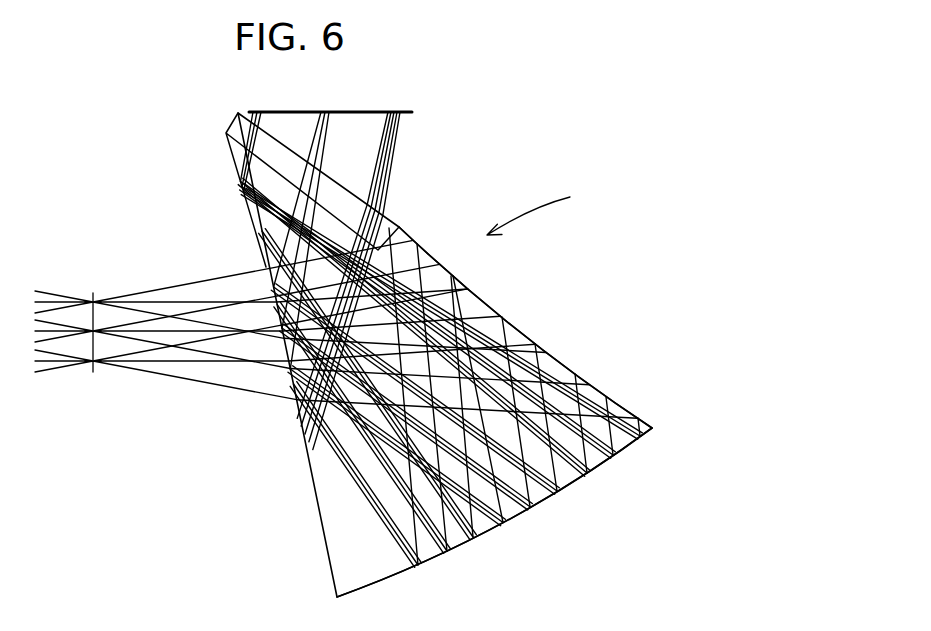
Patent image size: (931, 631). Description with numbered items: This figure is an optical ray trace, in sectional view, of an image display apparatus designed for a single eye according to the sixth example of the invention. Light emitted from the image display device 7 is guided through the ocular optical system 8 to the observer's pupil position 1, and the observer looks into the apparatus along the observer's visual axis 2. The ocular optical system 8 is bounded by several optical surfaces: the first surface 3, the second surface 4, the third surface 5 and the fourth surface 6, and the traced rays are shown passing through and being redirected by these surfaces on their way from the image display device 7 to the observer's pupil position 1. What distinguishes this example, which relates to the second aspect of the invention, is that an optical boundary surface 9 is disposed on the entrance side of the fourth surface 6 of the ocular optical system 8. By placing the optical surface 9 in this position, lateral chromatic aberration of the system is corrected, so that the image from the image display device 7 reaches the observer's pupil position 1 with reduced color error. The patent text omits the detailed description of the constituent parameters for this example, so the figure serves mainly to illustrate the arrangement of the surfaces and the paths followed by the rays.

The observer's pupil position 1 is at (95, 338).
The observer's visual axis 2 is at (173, 332).
The first surface of the ocular optical system 3 is at (312, 483).
The second surface of the ocular optical system 4 is at (482, 303).
The third surface of the ocular optical system 5 is at (501, 524).
The fourth surface of the ocular optical system 6 is at (352, 212).
The image display device 7 is at (372, 112).
The ocular optical system 8 is at (541, 206).
The optical surface 9 is at (248, 198).